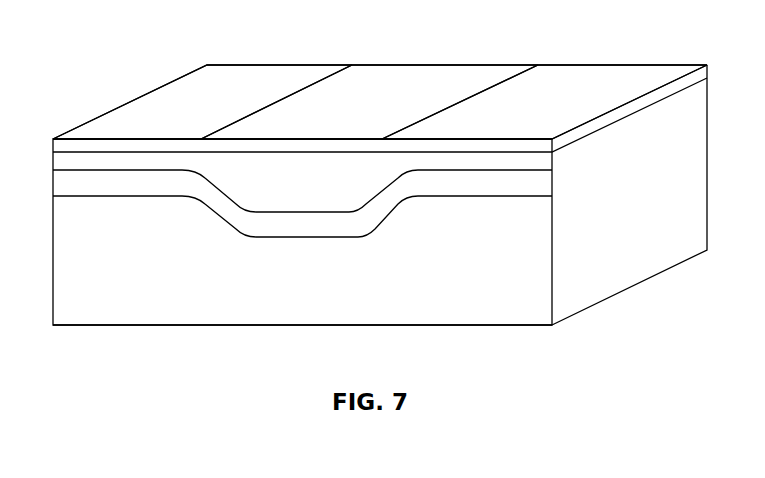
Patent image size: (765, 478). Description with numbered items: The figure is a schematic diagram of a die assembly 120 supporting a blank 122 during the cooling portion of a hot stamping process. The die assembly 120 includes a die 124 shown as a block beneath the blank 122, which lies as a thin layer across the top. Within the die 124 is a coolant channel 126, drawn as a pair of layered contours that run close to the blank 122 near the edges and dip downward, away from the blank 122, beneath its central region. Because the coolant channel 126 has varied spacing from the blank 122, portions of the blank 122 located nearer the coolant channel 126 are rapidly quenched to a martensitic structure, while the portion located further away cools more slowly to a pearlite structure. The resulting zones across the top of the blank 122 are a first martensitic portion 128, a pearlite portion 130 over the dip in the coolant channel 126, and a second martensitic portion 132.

The die assembly 120 is at (541, 325).
The blank 122 is at (574, 135).
The die 124 is at (68, 327).
The coolant channel 126 is at (320, 226).
The first martensitic portion 128 is at (267, 73).
The pearlite portion 130 is at (431, 73).
The second martensitic portion 132 is at (594, 73).